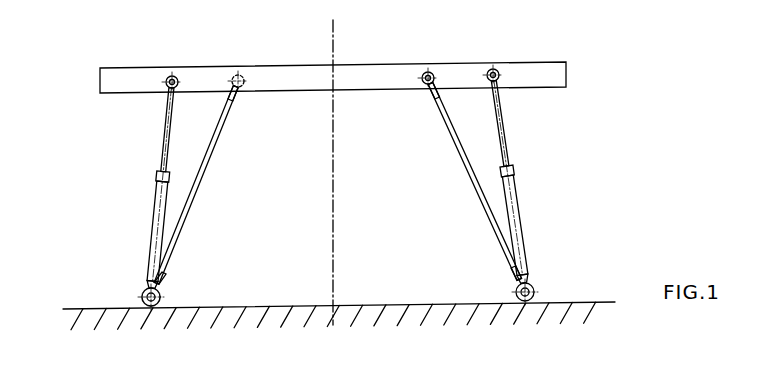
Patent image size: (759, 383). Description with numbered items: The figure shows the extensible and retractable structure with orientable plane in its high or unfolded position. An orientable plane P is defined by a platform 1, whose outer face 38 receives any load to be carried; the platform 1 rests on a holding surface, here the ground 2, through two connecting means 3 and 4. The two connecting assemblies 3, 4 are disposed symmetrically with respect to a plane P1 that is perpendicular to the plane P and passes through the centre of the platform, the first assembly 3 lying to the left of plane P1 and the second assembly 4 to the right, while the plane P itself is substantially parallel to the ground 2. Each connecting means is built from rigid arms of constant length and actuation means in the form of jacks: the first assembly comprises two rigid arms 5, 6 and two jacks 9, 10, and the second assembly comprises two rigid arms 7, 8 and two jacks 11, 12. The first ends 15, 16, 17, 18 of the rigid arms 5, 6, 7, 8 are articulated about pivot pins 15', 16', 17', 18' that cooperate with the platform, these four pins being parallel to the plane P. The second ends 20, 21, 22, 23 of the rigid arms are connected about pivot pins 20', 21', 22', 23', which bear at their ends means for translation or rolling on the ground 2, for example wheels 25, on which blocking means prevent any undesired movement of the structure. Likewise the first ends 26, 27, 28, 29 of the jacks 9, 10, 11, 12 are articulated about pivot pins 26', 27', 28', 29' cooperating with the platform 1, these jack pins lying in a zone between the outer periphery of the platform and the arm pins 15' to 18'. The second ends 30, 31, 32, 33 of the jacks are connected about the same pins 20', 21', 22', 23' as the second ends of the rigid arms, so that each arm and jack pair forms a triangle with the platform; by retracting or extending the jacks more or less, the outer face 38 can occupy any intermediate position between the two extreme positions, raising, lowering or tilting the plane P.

The platform 1 is at (355, 64).
The ground 2 is at (372, 306).
The connecting means 3 is at (136, 216).
The connecting means 4 is at (544, 202).
The rigid arm 5 is at (218, 185).
The rigid arm 6 is at (193, 197).
The rigid arm 7 is at (456, 181).
The rigid arm 8 is at (470, 184).
The jack 9 is at (114, 176).
The jack 10 is at (155, 176).
The jack 11 is at (565, 170).
The jack 12 is at (510, 183).
The first end of rigid arm 15 is at (276, 109).
The first end of rigid arm 16 is at (276, 109).
The pivot pin 15' is at (242, 55).
The pivot pin 16' is at (242, 55).
The first end of rigid arm 17 is at (395, 107).
The first end of rigid arm 18 is at (395, 107).
The pivot pin 17' is at (433, 50).
The pivot pin 18' is at (433, 50).
The second end of rigid arm 20 is at (214, 271).
The second end of rigid arm 21 is at (214, 271).
The pivot pin 20' is at (180, 332).
The pivot pin 21' is at (180, 332).
The second end of rigid arm 22 is at (467, 267).
The second end of rigid arm 23 is at (467, 267).
The pivot pin 22' is at (568, 323).
The pivot pin 23' is at (568, 323).
The wheels 25 is at (142, 297).
The first end of jack 26 is at (112, 130).
The first end of jack 27 is at (112, 130).
The pivot pin 26' is at (132, 55).
The pivot pin 27' is at (132, 55).
The first end of jack 28 is at (549, 124).
The first end of jack 29 is at (549, 124).
The pivot pin 28' is at (535, 47).
The pivot pin 29' is at (535, 47).
The second end of jack 30 is at (109, 188).
The second end of jack 31 is at (150, 267).
The second end of jack 32 is at (563, 182).
The second end of jack 33 is at (525, 254).
The outer face of platform 38 is at (100, 68).
The orientable plane P is at (566, 62).
The plane of symmetry P1 is at (333, 48).